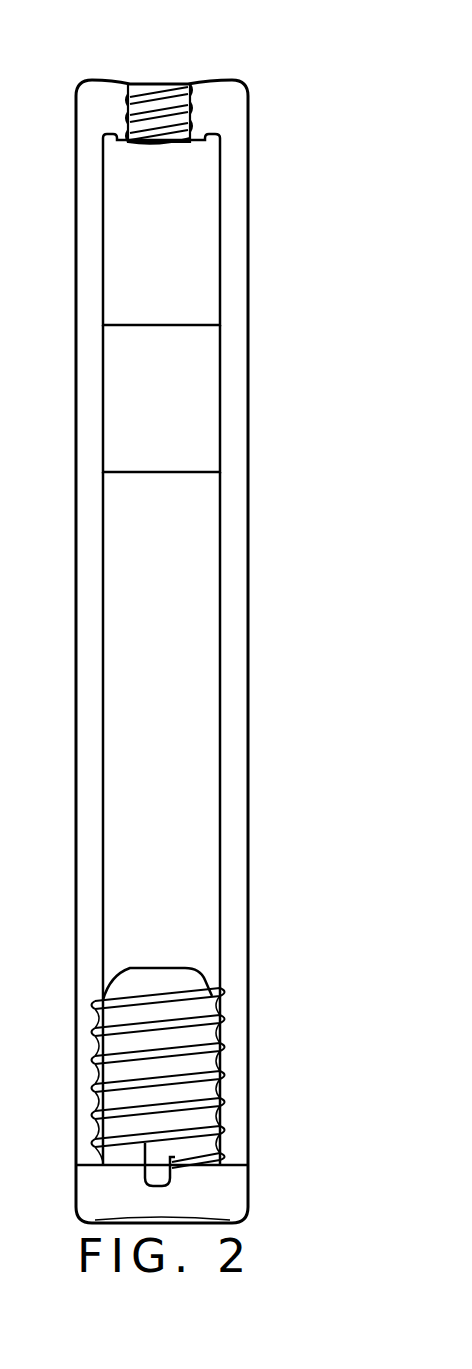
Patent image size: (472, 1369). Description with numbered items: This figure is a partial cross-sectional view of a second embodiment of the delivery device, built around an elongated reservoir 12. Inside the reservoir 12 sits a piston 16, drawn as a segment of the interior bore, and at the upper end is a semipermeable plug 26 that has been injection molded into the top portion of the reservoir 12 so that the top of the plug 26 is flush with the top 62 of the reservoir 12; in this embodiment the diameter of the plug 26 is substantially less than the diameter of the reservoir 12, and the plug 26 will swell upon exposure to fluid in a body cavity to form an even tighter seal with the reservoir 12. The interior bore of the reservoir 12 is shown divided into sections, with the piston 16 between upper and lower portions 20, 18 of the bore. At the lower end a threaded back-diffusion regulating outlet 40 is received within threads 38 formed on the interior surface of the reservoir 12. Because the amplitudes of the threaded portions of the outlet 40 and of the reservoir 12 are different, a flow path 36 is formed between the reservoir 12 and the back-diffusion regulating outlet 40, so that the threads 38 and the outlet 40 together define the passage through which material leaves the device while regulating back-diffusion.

The reservoir 12 is at (236, 510).
The piston 16 is at (198, 413).
The lower chamber 18 is at (203, 842).
The upper chamber 20 is at (200, 256).
The semipermeable plug 26 is at (158, 90).
The flow path 36 is at (222, 1030).
The threads 38 is at (224, 1095).
The back-diffusion regulating outlet 40 is at (190, 1120).
The top of the reservoir 62 is at (226, 79).